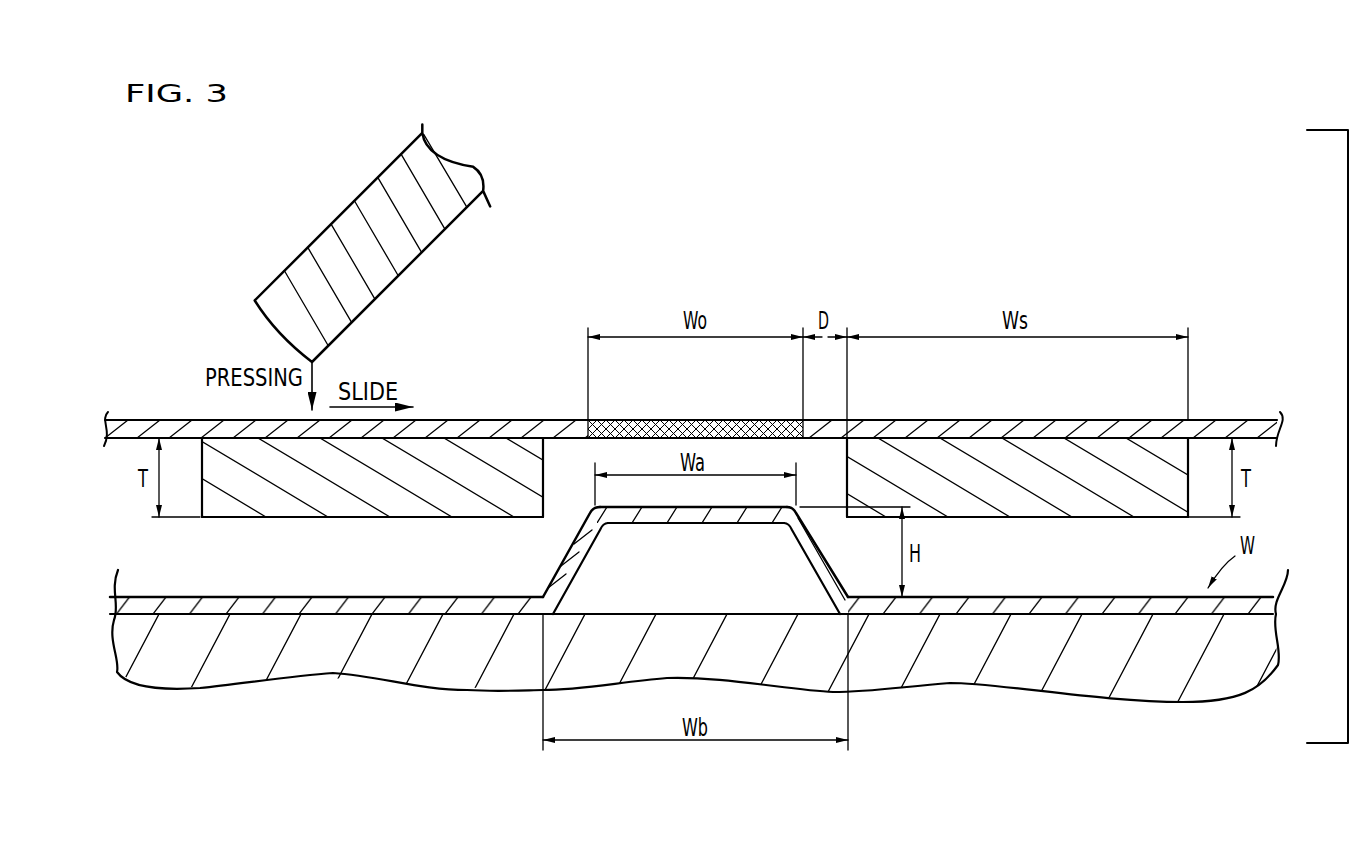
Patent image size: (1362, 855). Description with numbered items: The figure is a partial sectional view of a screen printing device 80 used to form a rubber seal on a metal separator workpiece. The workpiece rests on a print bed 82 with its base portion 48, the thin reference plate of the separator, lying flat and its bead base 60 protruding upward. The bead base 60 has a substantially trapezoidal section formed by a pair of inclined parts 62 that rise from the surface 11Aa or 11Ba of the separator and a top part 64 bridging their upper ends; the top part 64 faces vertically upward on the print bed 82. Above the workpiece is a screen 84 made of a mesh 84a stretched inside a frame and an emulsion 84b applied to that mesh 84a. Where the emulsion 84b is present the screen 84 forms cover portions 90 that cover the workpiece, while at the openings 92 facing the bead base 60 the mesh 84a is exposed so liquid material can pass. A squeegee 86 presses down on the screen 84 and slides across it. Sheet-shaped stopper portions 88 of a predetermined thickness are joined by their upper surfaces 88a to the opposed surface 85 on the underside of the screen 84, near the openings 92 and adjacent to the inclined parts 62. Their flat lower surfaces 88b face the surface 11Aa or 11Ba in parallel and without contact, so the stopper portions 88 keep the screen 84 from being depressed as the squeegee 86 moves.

The screen printing device 80 is at (350, 114).
The squeegee 86 is at (347, 212).
The cover portions 90 is at (133, 414).
The opposed surface 85 is at (193, 440).
The screen 84 is at (1212, 393).
The mesh 84a is at (738, 420).
The emulsion 84b is at (1068, 428).
The openings 92 is at (658, 412).
The stopper portions 88 is at (354, 519).
The upper surfaces 88a is at (456, 434).
The lower surfaces 88b is at (273, 519).
The bead base 60 is at (543, 557).
The inclined parts 62 is at (578, 558).
The top part 64 is at (703, 511).
The base portion 48 is at (1140, 606).
The print bed 82 is at (355, 667).
The surface 11Aa is at (691, 575).
The surface 11Ba is at (140, 597).